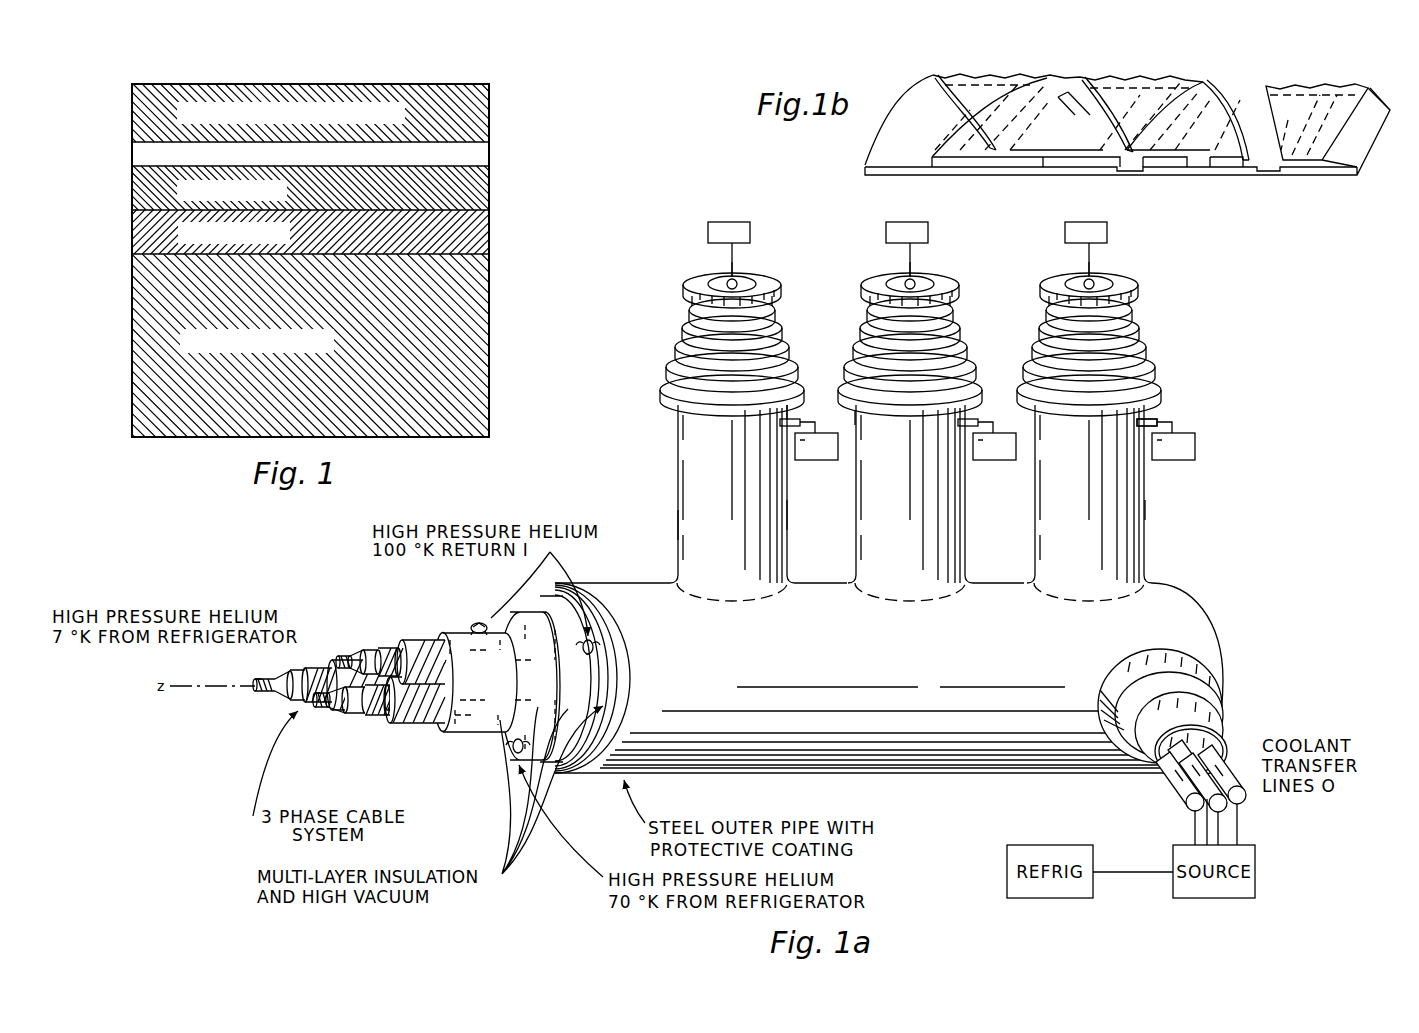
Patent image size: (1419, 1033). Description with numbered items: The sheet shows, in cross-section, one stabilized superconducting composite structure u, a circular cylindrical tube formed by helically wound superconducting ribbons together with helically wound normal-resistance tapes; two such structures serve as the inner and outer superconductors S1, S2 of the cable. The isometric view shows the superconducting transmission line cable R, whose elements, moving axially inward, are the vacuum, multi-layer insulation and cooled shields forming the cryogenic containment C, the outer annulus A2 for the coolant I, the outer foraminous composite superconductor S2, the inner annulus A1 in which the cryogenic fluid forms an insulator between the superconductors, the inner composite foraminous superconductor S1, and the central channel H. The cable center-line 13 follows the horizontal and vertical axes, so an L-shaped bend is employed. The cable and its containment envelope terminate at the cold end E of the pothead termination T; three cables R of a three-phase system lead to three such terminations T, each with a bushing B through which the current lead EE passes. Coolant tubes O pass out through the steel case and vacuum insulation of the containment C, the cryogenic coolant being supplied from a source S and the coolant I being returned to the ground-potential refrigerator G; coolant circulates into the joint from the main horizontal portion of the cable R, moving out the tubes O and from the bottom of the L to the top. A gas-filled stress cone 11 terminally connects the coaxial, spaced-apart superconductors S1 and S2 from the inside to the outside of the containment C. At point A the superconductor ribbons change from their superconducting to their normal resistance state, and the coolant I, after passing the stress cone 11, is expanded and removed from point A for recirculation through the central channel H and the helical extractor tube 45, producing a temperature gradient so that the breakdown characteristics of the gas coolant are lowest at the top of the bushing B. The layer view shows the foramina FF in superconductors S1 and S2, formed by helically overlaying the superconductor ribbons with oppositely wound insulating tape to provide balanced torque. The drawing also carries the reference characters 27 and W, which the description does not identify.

In FIG. 1, the superconducting composite structure u is at (494, 194).
In FIG. 1B, the base strip 27 is at (1228, 160).
In FIG. 1B, the forminae FF is at (1275, 173).
In FIG. 1A, the cold end E is at (677, 775).
In FIG. 1A, the cable R is at (607, 775).
In FIG. 1A, the containment C is at (572, 775).
In FIG. 1A, the helium outlet fitting W is at (438, 634).
In FIG. 1A, the coolant I is at (545, 603).
In FIG. 1A, the cooling tubes O is at (1234, 766).
In FIG. 1A, the source S is at (1255, 846).
In FIG. 1A, the refrigerator G is at (1193, 462).
In FIG. 1A, the center-line 13 is at (233, 689).
In FIG. 1A, the central channel H is at (258, 683).
In FIG. 1A, the inner composite foraminous superconductor S1 is at (330, 704).
In FIG. 1A, the inner annulus A1 is at (362, 712).
In FIG. 1A, the outer foraminous composite superconductor S2 is at (380, 712).
In FIG. 1A, the outer annulus A2 is at (413, 727).
In FIG. 1A, the bushing B is at (1149, 360).
In FIG. 1A, the current lead EE is at (1092, 266).
In FIG. 1A, the pothead termination T is at (853, 413).
In FIG. 1A, the point A is at (678, 528).
In FIG. 1A, the gas-filled stress cone 11 is at (791, 515).
In FIG. 1A, the helical extractor tube 45 is at (1153, 423).